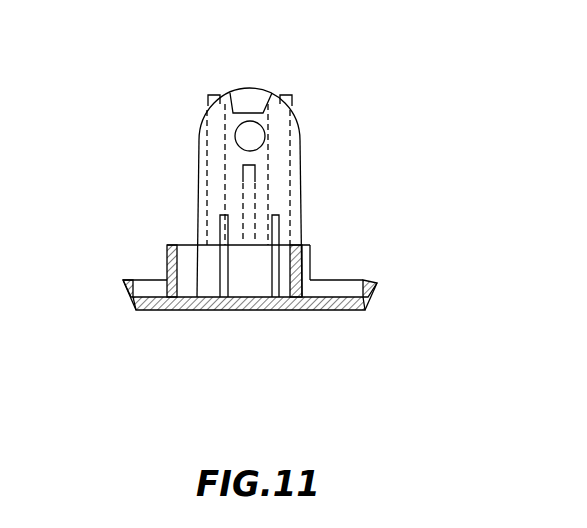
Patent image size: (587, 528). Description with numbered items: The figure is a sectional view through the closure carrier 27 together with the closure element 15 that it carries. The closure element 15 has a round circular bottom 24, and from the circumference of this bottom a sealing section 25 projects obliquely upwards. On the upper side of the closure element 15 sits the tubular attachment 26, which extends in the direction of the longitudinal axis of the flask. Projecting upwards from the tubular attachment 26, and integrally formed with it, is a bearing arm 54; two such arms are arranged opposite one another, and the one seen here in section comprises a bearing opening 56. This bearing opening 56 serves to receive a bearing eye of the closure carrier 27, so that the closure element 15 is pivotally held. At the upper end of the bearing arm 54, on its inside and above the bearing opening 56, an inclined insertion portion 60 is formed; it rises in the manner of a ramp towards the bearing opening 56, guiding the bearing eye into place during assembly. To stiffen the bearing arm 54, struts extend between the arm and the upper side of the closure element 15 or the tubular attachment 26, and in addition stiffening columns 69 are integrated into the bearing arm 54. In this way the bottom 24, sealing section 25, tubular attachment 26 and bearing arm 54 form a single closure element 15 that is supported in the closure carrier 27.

The closure element 15 is at (273, 317).
The bottom 24 is at (207, 312).
The sealing section 25 is at (377, 288).
The tubular attachment 26 is at (167, 261).
The closure carrier 27 is at (328, 150).
The bearing arm 54 is at (302, 203).
The bearing opening 56 is at (252, 138).
The inclined insertion portion 60 is at (252, 102).
The stiffening column 69 is at (213, 94).